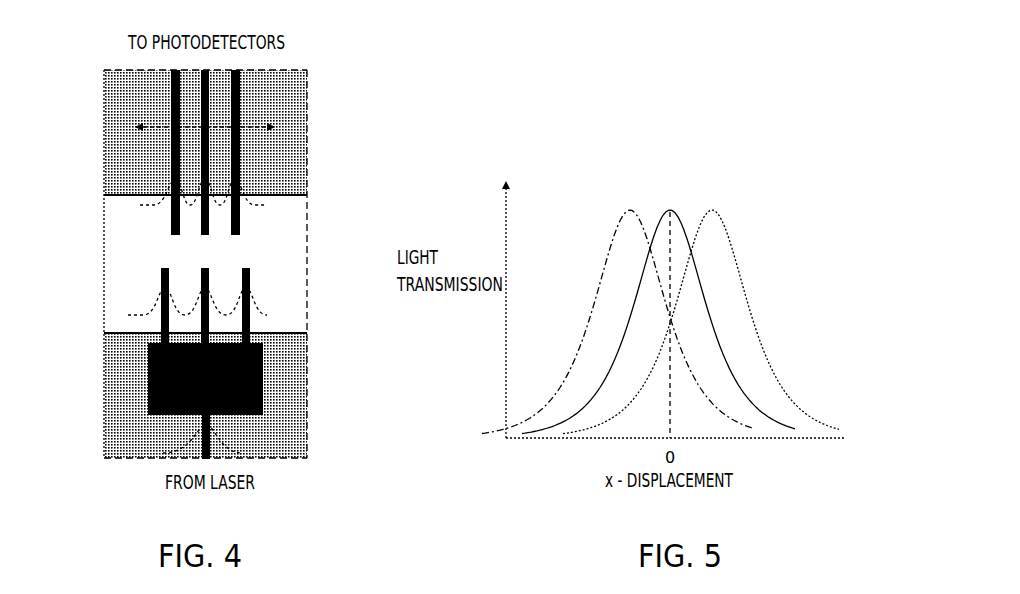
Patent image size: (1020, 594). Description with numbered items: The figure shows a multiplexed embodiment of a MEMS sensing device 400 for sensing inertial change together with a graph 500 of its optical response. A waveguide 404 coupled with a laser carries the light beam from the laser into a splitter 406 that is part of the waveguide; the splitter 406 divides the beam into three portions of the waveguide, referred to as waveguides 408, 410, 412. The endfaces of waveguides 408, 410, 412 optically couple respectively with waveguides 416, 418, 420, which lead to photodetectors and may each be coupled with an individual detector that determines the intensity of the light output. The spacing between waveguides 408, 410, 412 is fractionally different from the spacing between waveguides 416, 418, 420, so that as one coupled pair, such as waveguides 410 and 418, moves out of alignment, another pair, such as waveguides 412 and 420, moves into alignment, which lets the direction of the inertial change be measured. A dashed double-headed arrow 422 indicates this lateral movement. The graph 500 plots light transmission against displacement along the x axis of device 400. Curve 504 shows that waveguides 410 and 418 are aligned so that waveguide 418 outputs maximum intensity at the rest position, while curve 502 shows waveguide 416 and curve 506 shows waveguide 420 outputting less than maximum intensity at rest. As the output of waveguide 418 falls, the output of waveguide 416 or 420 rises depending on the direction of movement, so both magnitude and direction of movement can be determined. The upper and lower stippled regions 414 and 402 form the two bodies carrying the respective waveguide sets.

In FIG. 4, the MEMS sensing device 400 is at (353, 106).
In FIG. 4, the laser-side chip / cladding region 402 is at (103, 406).
In FIG. 4, the waveguide 404 is at (212, 430).
In FIG. 4, the splitter 406 is at (263, 378).
In FIG. 4, the waveguide 408 is at (250, 271).
In FIG. 4, the waveguide 410 is at (199, 280).
In FIG. 4, the waveguide 412 is at (160, 270).
In FIG. 4, the photodetector-side chip / cladding region 414 is at (307, 180).
In FIG. 4, the waveguide 416 is at (240, 173).
In FIG. 4, the waveguide 418 is at (210, 218).
In FIG. 4, the waveguide 420 is at (172, 176).
In FIG. 4, the lateral displacement direction 422 is at (165, 122).
In FIG. 5, the graph 500 is at (746, 155).
In FIG. 5, the curve 502 is at (725, 232).
In FIG. 5, the curve 504 is at (672, 212).
In FIG. 5, the curve 506 is at (620, 220).